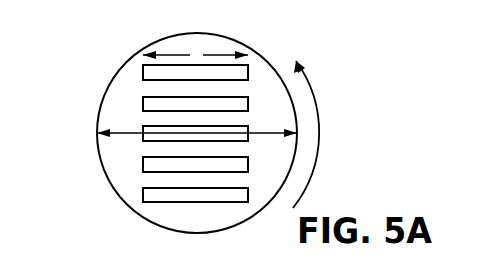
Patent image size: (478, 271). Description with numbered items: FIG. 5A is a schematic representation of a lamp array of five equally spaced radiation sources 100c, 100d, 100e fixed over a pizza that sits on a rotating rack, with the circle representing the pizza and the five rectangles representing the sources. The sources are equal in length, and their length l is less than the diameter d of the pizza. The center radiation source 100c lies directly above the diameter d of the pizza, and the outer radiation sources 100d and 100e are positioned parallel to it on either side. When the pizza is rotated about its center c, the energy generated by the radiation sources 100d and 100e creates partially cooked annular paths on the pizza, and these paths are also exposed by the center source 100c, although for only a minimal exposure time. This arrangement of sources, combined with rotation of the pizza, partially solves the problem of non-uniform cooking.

The center radiation source 100c is at (248, 139).
The radiation source 100d is at (143, 105).
The radiation source 100e is at (245, 72).
The center c is at (197, 133).
The diameter d is at (197, 123).
The length l is at (196, 63).